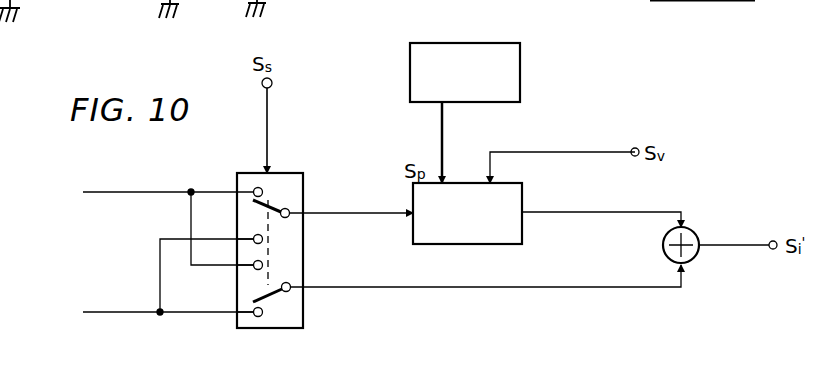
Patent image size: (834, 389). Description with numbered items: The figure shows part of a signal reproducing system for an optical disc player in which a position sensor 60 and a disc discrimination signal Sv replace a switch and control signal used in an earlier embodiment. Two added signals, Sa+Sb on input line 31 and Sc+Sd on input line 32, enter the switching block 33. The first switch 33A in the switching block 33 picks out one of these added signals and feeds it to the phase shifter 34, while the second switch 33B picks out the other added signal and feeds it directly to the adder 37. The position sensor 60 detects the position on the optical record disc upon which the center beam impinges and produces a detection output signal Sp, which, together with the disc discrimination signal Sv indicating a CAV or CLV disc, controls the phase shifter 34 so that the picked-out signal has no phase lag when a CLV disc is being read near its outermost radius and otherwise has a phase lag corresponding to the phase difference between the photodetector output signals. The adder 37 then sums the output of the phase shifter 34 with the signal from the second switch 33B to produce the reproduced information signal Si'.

The first input signal line (Sa+Sb) 31 is at (144, 217).
The second input signal line (Sc+Sd) 32 is at (144, 283).
The switching block 33 is at (256, 328).
The first switch 33A is at (272, 200).
The second switch 33B is at (277, 298).
The phase shifter 34 is at (512, 244).
The adder 37 is at (695, 258).
The position sensor 60 is at (507, 43).